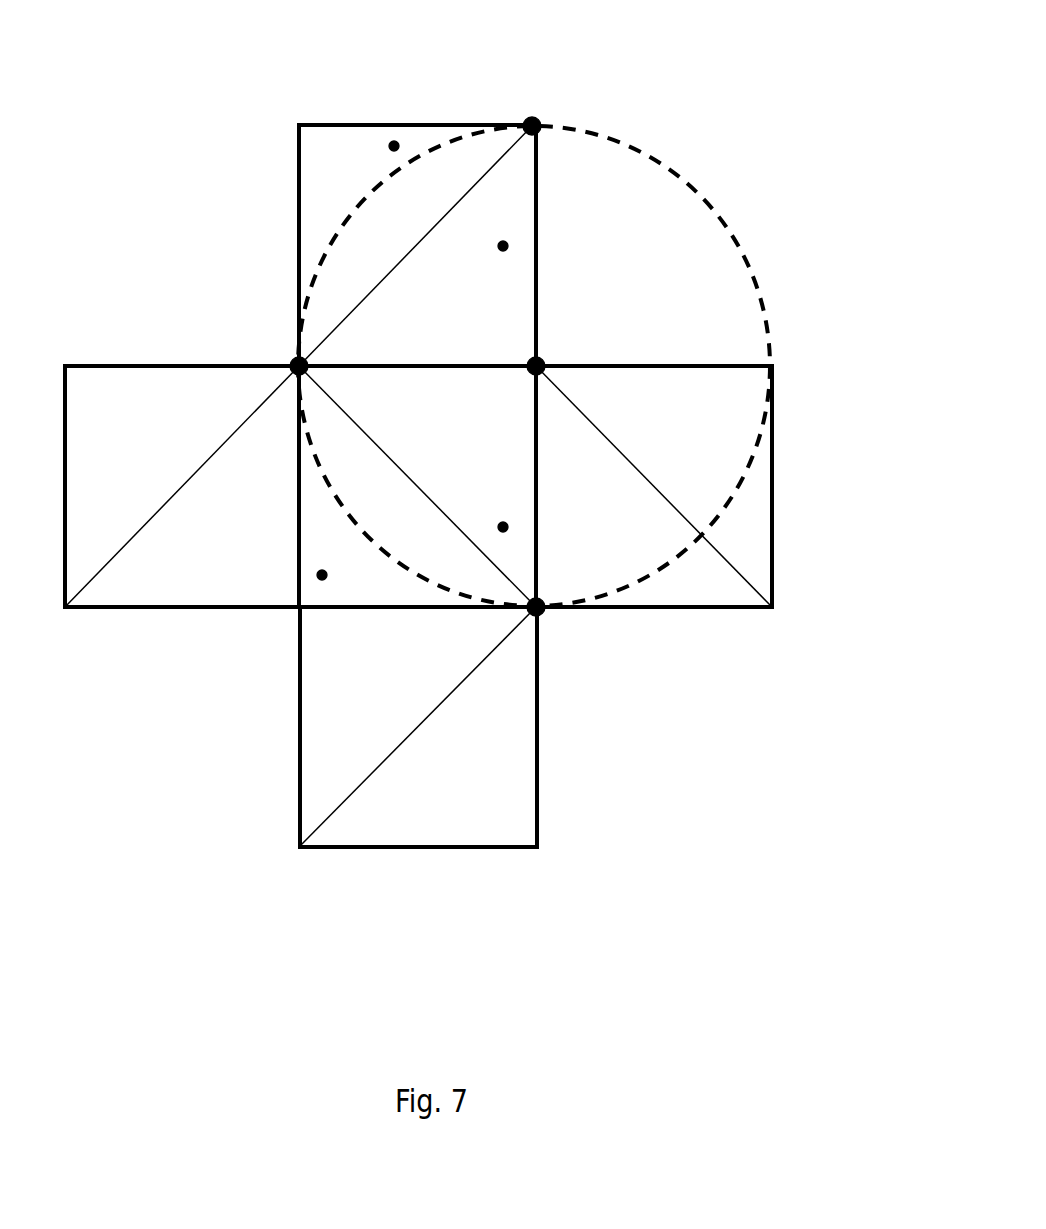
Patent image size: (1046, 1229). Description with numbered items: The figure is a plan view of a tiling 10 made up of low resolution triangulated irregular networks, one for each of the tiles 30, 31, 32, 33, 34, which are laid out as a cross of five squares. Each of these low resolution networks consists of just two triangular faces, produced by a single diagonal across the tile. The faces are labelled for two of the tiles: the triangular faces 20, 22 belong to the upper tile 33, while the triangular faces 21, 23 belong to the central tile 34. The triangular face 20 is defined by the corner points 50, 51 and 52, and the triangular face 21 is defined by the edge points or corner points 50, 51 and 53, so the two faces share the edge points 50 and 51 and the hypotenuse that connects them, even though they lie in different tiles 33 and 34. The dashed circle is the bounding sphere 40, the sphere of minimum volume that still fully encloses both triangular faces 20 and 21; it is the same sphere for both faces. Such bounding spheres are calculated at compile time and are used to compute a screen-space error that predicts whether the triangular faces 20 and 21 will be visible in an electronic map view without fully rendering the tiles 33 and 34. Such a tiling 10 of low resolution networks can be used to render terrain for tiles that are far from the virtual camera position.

The tiling 10 is at (392, 480).
The triangular face 20 is at (506, 244).
The triangular face 21 is at (506, 530).
The triangular face 22 is at (391, 142).
The triangular face 23 is at (319, 578).
The tile 30 is at (115, 610).
The tile 31 is at (345, 850).
The tile 32 is at (687, 610).
The tile 33 is at (297, 203).
The tile 34 is at (391, 610).
The bounding sphere 40 is at (647, 153).
The edge point 50 is at (289, 353).
The edge point 51 is at (548, 353).
The corner point 52 is at (545, 115).
The corner point 53 is at (548, 620).